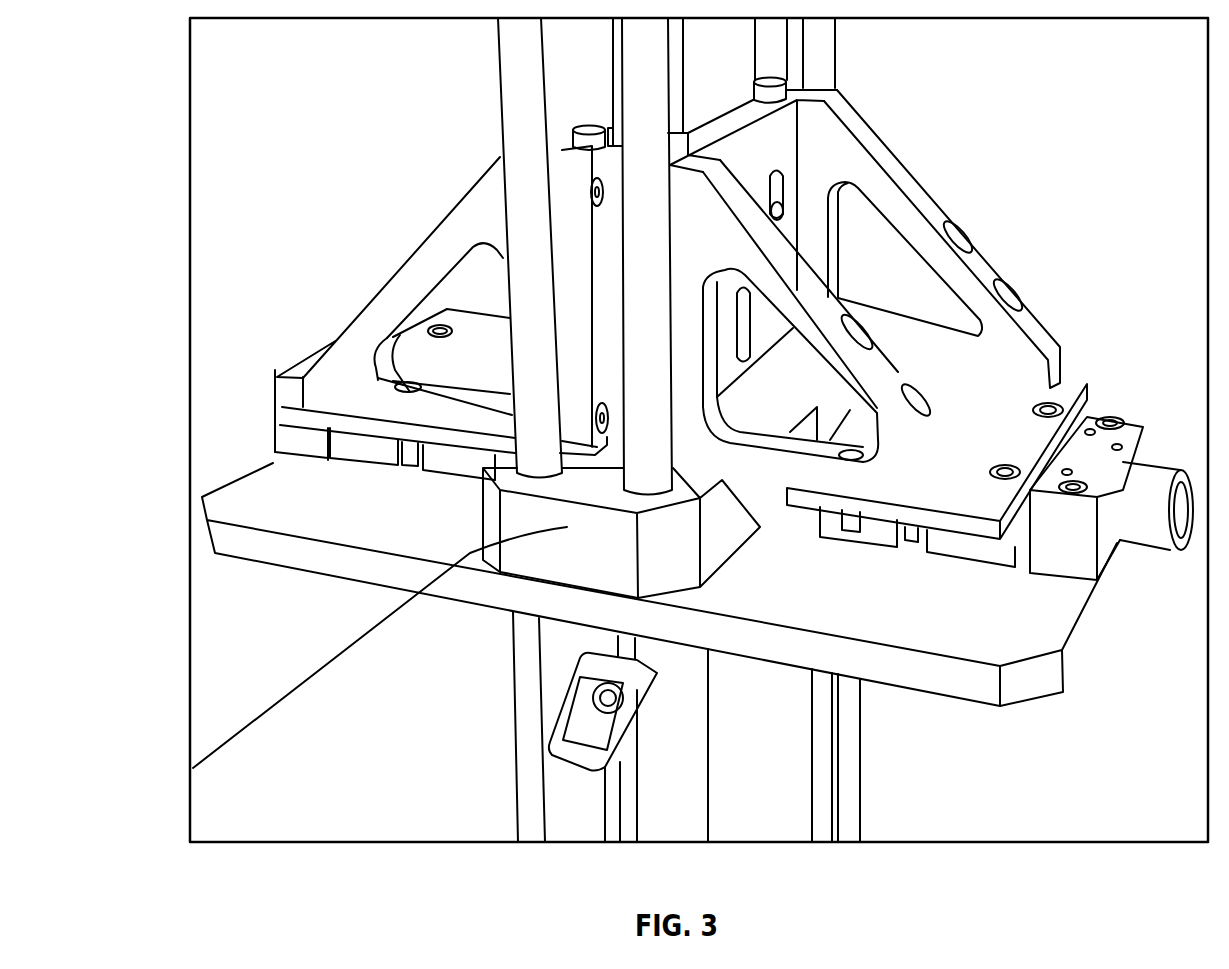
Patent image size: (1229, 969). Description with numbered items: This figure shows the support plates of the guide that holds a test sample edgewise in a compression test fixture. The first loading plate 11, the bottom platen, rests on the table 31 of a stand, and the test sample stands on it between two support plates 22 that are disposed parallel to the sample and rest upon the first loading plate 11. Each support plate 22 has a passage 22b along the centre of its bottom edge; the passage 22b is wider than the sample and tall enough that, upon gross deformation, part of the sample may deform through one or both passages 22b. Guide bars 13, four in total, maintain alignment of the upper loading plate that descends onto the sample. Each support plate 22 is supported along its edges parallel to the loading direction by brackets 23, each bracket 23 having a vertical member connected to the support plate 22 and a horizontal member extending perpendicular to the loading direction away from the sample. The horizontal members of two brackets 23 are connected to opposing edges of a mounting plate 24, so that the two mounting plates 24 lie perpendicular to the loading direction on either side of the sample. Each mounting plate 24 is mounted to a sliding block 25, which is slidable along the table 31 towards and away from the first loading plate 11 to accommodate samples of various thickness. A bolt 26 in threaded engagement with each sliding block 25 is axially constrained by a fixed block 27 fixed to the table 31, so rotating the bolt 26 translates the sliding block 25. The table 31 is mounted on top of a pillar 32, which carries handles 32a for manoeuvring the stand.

The first loading plate 11 is at (470, 553).
The guide bar 13 is at (530, 176).
The support plate 22 is at (588, 248).
The passage 22b is at (600, 426).
The bracket 23 is at (410, 292).
The mounting plate 24 is at (275, 445).
The sliding block 25 is at (385, 450).
The bolt 26 is at (1153, 495).
The fixed block 27 is at (287, 386).
The table 31 is at (967, 640).
The pillar 32 is at (750, 760).
The handle 32a is at (587, 792).